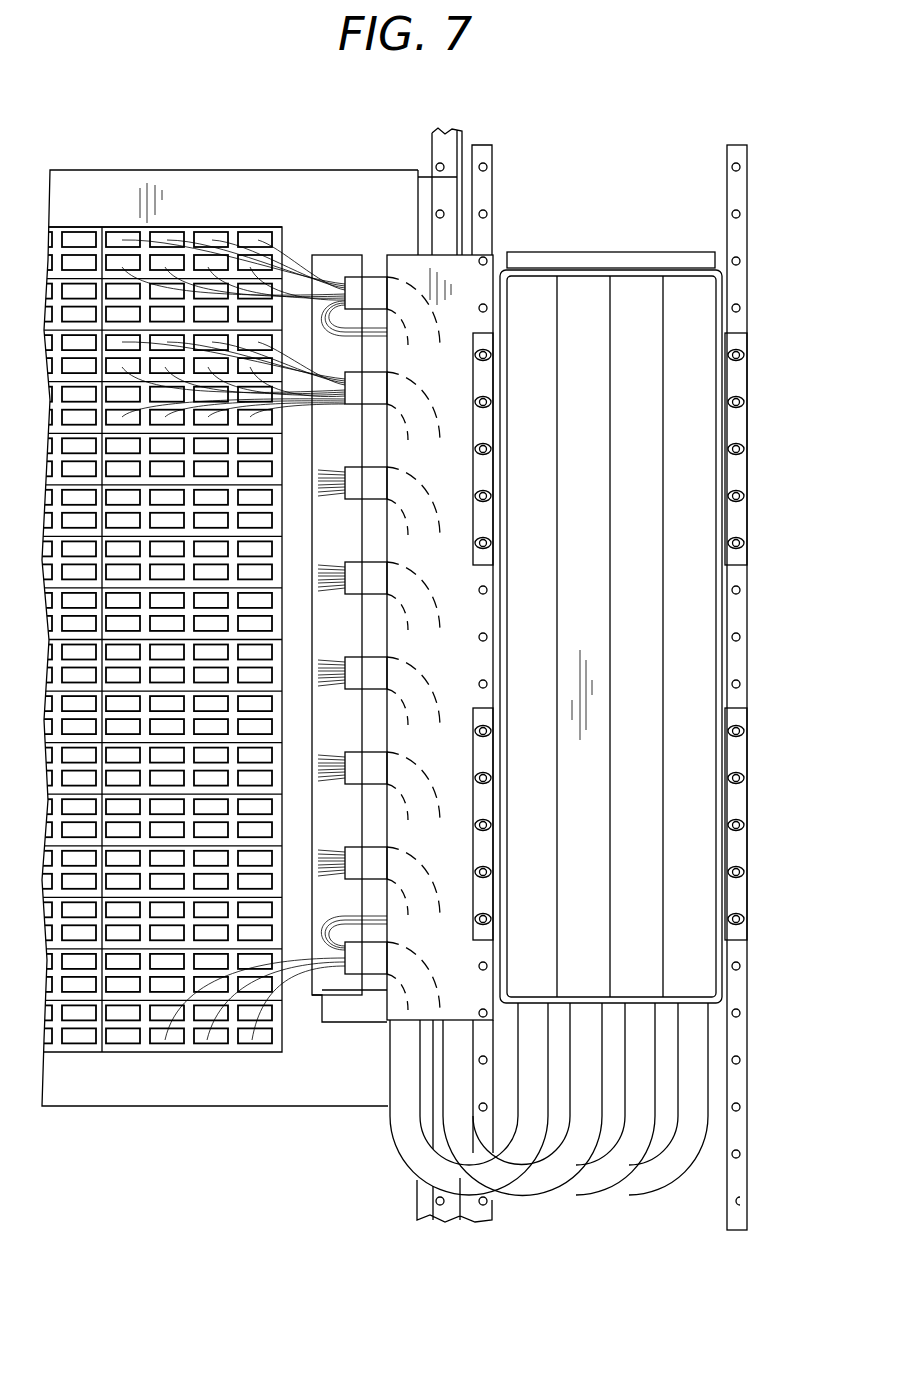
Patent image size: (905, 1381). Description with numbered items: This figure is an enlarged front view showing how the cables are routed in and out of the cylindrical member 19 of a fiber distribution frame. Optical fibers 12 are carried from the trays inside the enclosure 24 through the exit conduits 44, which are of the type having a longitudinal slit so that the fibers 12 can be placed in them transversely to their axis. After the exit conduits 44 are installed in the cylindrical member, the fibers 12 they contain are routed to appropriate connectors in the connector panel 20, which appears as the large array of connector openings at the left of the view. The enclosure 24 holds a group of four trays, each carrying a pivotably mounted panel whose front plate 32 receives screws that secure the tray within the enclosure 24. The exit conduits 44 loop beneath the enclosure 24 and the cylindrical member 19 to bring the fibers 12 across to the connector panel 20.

The optical fibers 12 is at (300, 242).
The cylindrical member 19 is at (467, 272).
The connector panel 20 is at (145, 1040).
The enclosure 24 is at (718, 308).
The front plate 32 is at (685, 432).
The exit conduits 44 is at (483, 1190).